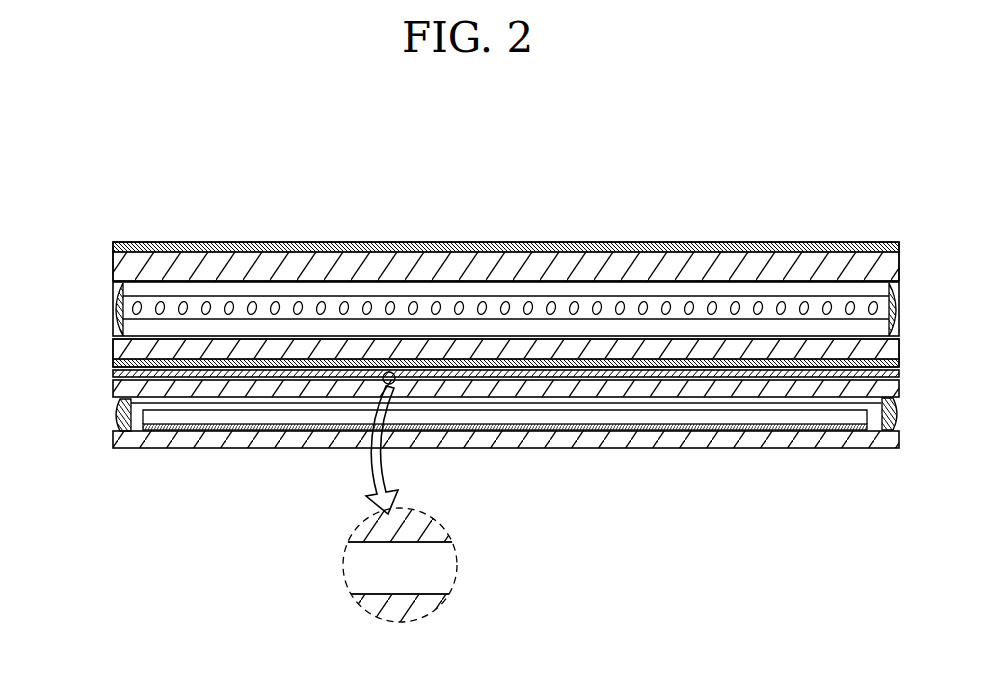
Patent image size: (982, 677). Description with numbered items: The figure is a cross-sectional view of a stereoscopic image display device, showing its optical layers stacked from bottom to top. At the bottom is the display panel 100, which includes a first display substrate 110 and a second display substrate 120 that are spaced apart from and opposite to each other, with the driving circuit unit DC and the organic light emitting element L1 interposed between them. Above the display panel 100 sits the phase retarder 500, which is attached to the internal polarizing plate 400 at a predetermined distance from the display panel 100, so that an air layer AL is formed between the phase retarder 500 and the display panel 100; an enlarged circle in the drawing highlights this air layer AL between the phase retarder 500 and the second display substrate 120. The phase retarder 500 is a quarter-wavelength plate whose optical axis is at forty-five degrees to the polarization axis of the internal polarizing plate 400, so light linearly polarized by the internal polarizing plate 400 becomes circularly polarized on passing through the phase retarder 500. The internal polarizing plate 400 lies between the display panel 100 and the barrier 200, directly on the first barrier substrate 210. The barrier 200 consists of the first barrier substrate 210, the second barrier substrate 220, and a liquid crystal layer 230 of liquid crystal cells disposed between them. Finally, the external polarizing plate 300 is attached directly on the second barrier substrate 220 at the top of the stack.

The display panel 100 is at (112, 420).
The first display substrate 110 is at (752, 440).
The second display substrate 120 is at (817, 390).
The barrier 200 is at (112, 310).
The first barrier substrate 210 is at (795, 350).
The second barrier substrate 220 is at (694, 265).
The liquid crystal layer 230 is at (609, 305).
The external polarizing plate 300 is at (118, 248).
The internal polarizing plate 400 is at (113, 364).
The phase retarder 500 is at (113, 373).
The driving circuit unit DC is at (613, 431).
The organic light emitting element L1 is at (680, 415).
The air layer AL is at (437, 560).